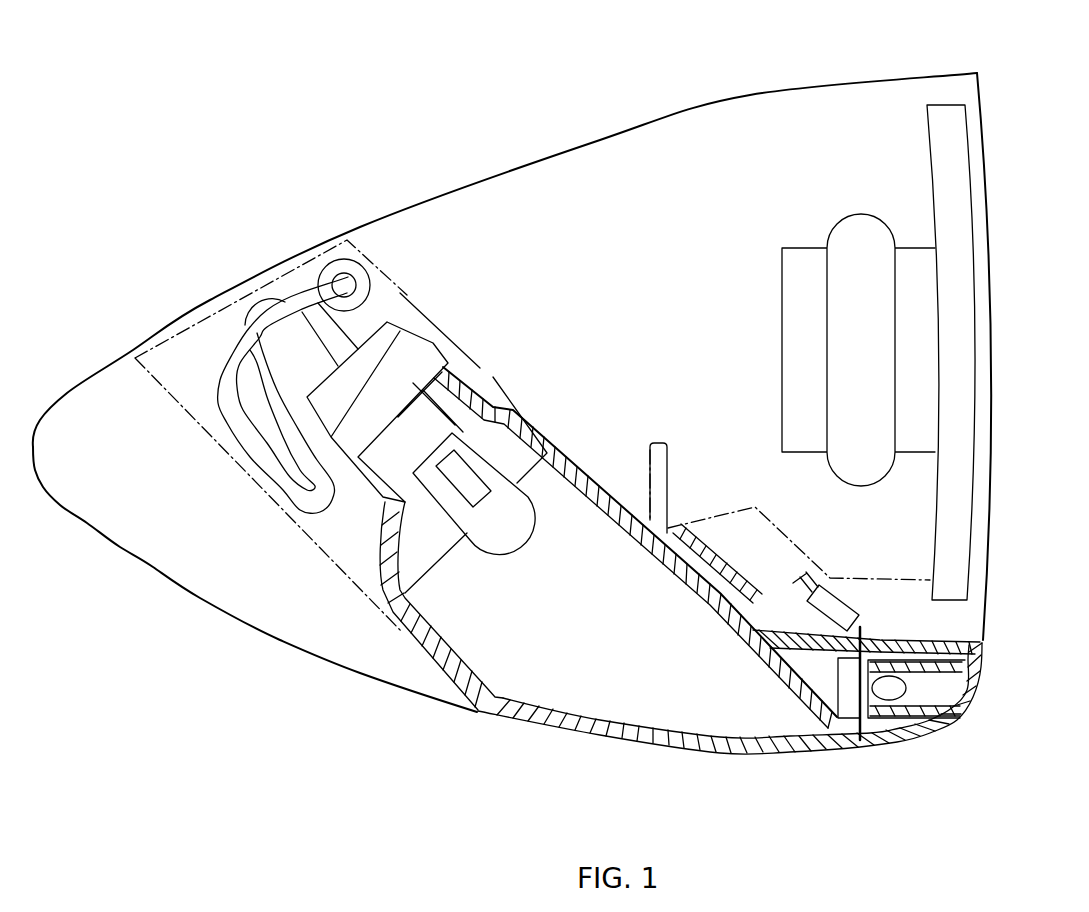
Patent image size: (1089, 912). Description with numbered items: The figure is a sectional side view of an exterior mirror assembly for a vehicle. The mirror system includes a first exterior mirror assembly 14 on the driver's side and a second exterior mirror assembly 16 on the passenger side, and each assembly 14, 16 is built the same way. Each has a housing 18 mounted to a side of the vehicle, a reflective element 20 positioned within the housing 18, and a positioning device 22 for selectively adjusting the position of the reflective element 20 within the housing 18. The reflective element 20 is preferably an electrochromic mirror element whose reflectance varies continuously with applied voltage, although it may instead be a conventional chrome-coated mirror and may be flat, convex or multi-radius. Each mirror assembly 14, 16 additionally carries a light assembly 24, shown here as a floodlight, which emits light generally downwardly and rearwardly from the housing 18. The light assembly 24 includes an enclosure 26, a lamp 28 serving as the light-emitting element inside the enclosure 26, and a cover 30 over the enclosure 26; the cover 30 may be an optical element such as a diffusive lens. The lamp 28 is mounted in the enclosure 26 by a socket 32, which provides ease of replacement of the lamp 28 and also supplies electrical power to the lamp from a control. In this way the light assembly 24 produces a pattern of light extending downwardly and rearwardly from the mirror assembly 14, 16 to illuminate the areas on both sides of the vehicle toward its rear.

The first exterior mirror assembly 14 is at (512, 369).
The second exterior mirror assembly 16 is at (641, 118).
The housing 18 is at (750, 95).
The reflective element 20 is at (973, 233).
The positioning device 22 is at (862, 213).
The light assembly 24 is at (483, 367).
The enclosure 26 is at (375, 548).
The lamp 28 is at (503, 553).
The cover 30 is at (722, 756).
The socket 32 is at (403, 330).